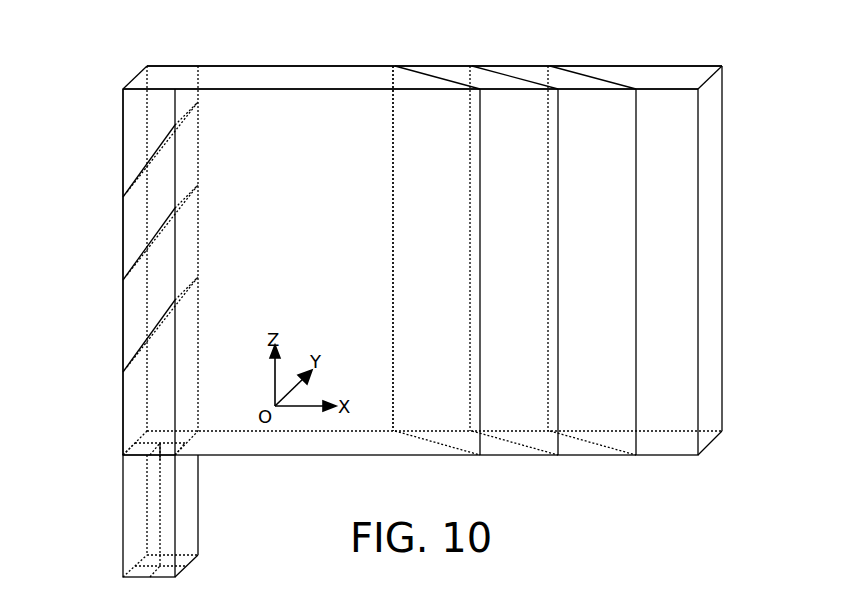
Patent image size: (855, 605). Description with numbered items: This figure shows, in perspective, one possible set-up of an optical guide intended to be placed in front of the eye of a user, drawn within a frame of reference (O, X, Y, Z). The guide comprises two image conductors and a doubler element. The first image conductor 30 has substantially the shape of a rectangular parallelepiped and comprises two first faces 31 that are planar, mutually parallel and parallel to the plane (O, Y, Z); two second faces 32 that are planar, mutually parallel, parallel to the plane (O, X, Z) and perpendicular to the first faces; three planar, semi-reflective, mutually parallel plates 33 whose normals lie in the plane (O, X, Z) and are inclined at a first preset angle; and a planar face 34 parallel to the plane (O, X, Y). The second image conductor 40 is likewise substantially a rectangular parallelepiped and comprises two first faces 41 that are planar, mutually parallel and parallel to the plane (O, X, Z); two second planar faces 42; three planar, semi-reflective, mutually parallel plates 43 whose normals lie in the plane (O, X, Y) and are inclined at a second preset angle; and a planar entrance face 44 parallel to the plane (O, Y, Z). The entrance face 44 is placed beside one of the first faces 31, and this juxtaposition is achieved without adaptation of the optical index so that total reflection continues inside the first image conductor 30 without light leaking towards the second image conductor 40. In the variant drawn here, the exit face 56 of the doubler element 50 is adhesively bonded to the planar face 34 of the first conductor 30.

The first image conductor 30 is at (103, 193).
The first faces 31 is at (190, 216).
The second faces 32 is at (136, 310).
The plates 33 is at (163, 238).
The planar face 34 is at (130, 442).
The second image conductor 40 is at (733, 178).
The first faces 41 is at (667, 378).
The second planar faces 42 is at (660, 73).
The plates 43 is at (428, 228).
The entrance face 44 is at (190, 271).
The doubler element 50 is at (103, 513).
The exit face 56 is at (111, 458).